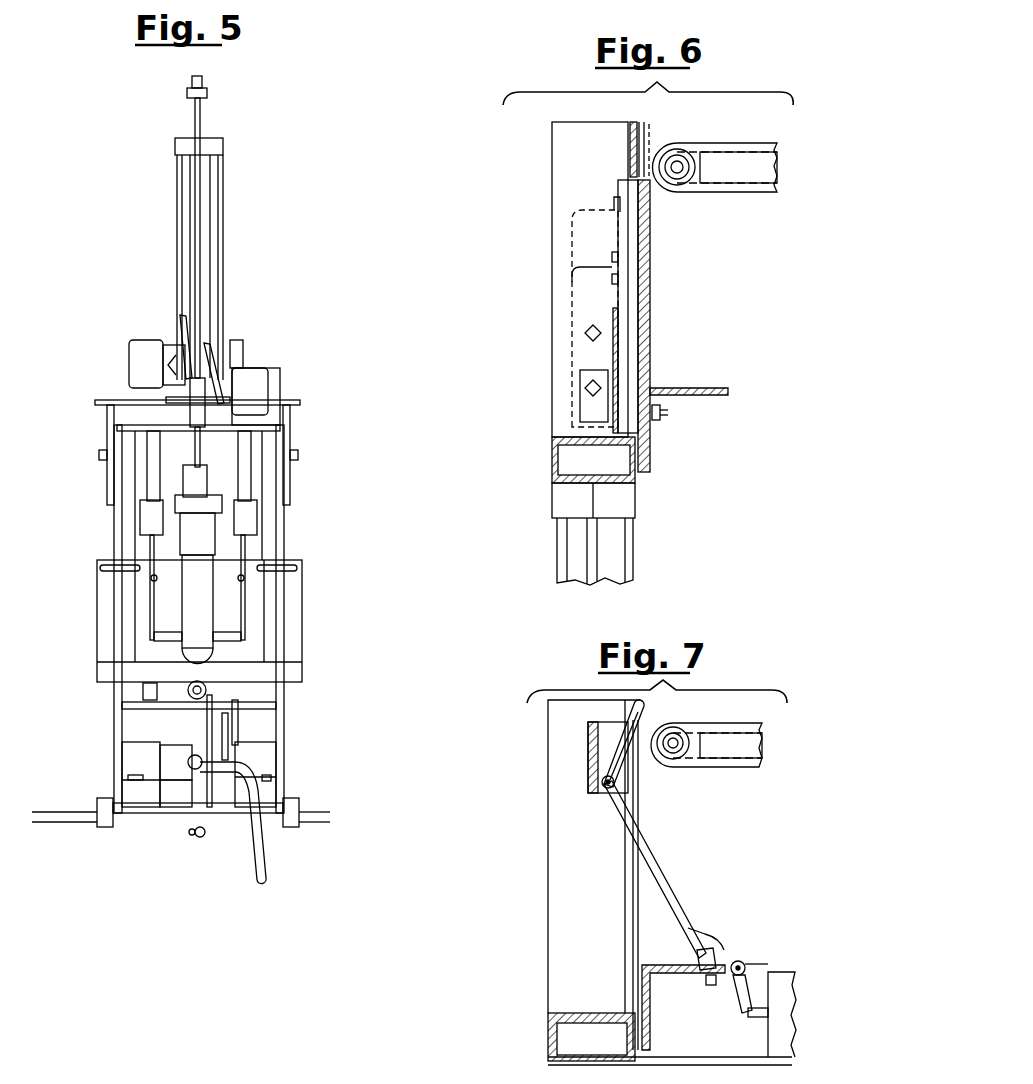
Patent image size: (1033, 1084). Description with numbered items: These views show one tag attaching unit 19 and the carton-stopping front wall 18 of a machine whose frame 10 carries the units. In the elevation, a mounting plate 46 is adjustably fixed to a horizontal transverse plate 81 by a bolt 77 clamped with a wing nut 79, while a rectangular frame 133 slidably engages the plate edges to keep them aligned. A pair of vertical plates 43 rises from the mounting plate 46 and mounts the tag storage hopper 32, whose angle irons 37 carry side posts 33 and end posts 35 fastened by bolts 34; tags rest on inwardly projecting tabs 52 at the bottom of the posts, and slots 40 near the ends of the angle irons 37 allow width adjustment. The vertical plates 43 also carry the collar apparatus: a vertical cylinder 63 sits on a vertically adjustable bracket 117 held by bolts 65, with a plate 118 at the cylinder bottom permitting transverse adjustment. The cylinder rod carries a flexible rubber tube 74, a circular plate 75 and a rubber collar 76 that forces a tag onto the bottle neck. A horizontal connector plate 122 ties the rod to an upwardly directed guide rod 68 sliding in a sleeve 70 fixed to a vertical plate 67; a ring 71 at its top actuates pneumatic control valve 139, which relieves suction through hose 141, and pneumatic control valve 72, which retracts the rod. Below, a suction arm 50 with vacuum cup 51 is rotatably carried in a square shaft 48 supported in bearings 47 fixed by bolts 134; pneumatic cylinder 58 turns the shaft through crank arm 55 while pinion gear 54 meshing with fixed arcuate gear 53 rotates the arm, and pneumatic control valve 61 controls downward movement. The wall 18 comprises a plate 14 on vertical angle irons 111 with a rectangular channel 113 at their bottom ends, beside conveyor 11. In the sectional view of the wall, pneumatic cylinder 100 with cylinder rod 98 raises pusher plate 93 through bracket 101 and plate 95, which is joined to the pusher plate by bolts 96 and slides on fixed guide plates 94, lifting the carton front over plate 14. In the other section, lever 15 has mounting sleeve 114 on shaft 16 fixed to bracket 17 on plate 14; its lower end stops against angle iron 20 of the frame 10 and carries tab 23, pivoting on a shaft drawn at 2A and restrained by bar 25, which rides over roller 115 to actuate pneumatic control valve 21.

In FIG. 5, the frame 10 is at (155, 66).
In FIG. 5, the ring 71 is at (207, 93).
In FIG. 5, the guide rod 68 is at (200, 205).
In FIG. 5, the vertical cylinder 63 is at (219, 252).
In FIG. 5, the pneumatic control valve 139 is at (142, 340).
In FIG. 5, the pneumatic control valve 72 is at (240, 366).
In FIG. 5, the vertical plate 67 is at (278, 385).
In FIG. 5, the sleeve 70 is at (232, 414).
In FIG. 5, the plate 118 is at (100, 400).
In FIG. 5, the bracket 117 is at (107, 428).
In FIG. 5, the connector plate 122 is at (185, 425).
In FIG. 5, the bolts 65 is at (99, 457).
In FIG. 5, the vertical plates 43 is at (114, 528).
In FIG. 5, the end posts 35 is at (147, 440).
In FIG. 5, the tag storage hopper 32 is at (146, 490).
In FIG. 5, the rubber tube 74 is at (195, 455).
In FIG. 5, the circular plate 75 is at (222, 465).
In FIG. 5, the bolts 34 is at (140, 525).
In FIG. 5, the rubber collar 76 is at (204, 544).
In FIG. 5, the angle irons 37 is at (108, 625).
In FIG. 5, the slots 40 is at (100, 570).
In FIG. 5, the tag attaching unit 19 is at (92, 605).
In FIG. 5, the tabs 52 is at (150, 590).
In FIG. 5, the side posts 33 is at (156, 585).
In FIG. 5, the pneumatic control valve 61 is at (143, 690).
In FIG. 5, the crank arm 55 is at (232, 708).
In FIG. 5, the suction arm 50 is at (188, 755).
In FIG. 5, the square shaft 48 is at (183, 774).
In FIG. 5, the pinion gear 54 is at (200, 755).
In FIG. 5, the pneumatic cylinder 58 is at (230, 742).
In FIG. 5, the bearings 47 is at (132, 750).
In FIG. 5, the bolts 134 is at (128, 778).
In FIG. 5, the vacuum cup 51 is at (176, 793).
In FIG. 5, the mounting plate 46 is at (120, 808).
In FIG. 5, the rectangular frame 133 is at (299, 808).
In FIG. 5, the transverse plate 81 is at (60, 822).
In FIG. 5, the arcuate gear 53 is at (205, 790).
In FIG. 5, the wing nut 79 is at (206, 832).
In FIG. 5, the bolt 77 is at (198, 838).
In FIG. 5, the hoses 141 is at (262, 858).
In FIG. 6, the front wall 18 is at (548, 250).
In FIG. 7, the front wall 18 is at (545, 864).
In FIG. 6, the angle irons 111 is at (565, 182).
In FIG. 7, the angle irons 111 is at (594, 934).
In FIG. 6, the plate 14 is at (630, 140).
In FIG. 7, the plate 14 is at (625, 707).
In FIG. 6, the conveyor 11 is at (712, 148).
In FIG. 7, the conveyor 11 is at (700, 728).
In FIG. 6, the pusher plate 93 is at (650, 226).
In FIG. 6, the guide plates 94 is at (636, 270).
In FIG. 6, the plate 95 is at (640, 290).
In FIG. 6, the bracket 101 is at (572, 220).
In FIG. 6, the bolts 96 is at (612, 228).
In FIG. 6, the rectangular channel 113 is at (552, 470).
In FIG. 7, the rectangular channel 113 is at (548, 1045).
In FIG. 6, the cylinder rod 98 is at (620, 475).
In FIG. 6, the pneumatic cylinder 100 is at (575, 548).
In FIG. 7, the bracket 17 is at (588, 768).
In FIG. 7, the lever 15 is at (658, 868).
In FIG. 7, the shaft 16 is at (615, 782).
In FIG. 7, the mounting sleeve 114 is at (607, 792).
In FIG. 7, the angle iron 20 is at (684, 976).
In FIG. 7, the lever end 2A is at (695, 955).
In FIG. 7, the bar 25 is at (711, 940).
In FIG. 7, the tab 23 is at (712, 988).
In FIG. 7, the roller 115 is at (738, 960).
In FIG. 7, the pneumatic control valve 21 is at (782, 972).